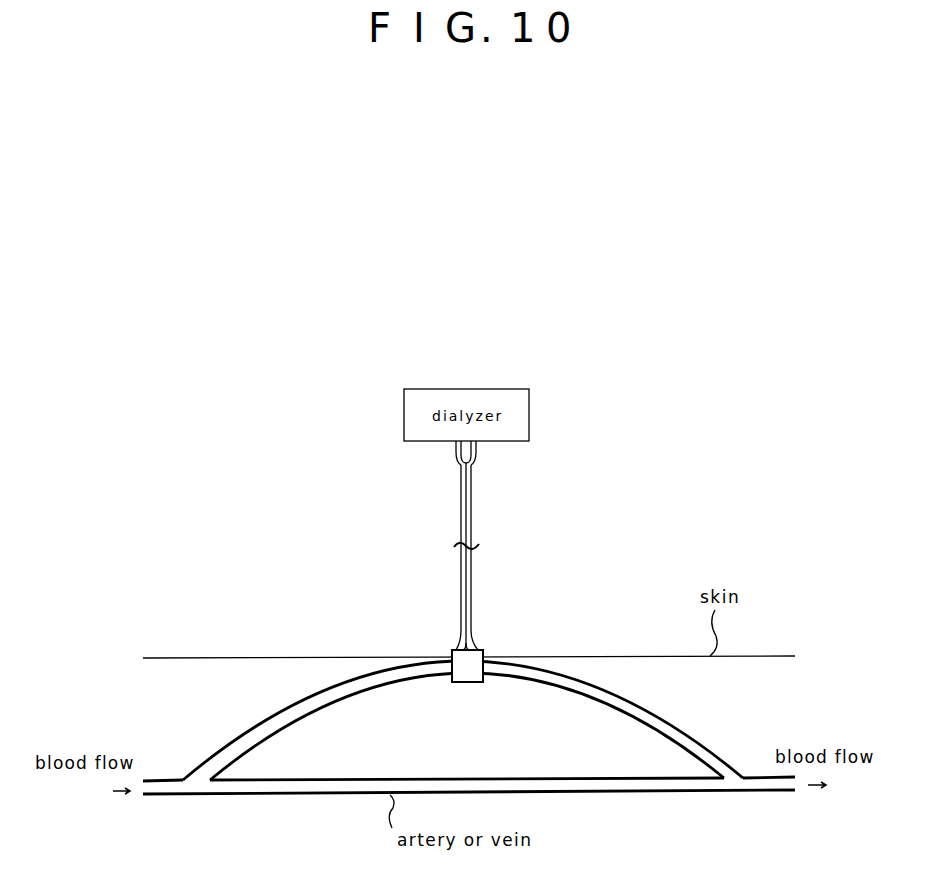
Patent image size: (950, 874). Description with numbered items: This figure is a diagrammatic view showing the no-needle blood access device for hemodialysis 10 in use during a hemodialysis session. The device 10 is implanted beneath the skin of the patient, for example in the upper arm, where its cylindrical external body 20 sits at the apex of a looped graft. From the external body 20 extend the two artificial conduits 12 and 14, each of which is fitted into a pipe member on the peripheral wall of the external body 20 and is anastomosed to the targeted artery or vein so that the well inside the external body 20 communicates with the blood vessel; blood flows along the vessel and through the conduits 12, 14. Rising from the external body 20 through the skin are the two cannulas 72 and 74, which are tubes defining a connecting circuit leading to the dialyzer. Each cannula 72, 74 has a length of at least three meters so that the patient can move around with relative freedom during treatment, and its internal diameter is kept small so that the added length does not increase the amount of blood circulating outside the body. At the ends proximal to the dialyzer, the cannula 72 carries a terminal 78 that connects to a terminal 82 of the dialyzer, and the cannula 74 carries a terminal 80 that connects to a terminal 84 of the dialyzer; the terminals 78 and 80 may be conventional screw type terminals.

The no-needle blood access device for hemodialysis 10 is at (437, 637).
The artificial conduit 12 is at (278, 708).
The artificial conduit 14 is at (651, 706).
The external body 20 is at (474, 683).
The cannula 72 is at (460, 572).
The cannula 74 is at (473, 571).
The terminal 78 is at (453, 455).
The terminal 80 is at (480, 455).
The terminal of the dialyzer 82 is at (458, 444).
The terminal of the dialyzer 84 is at (475, 444).